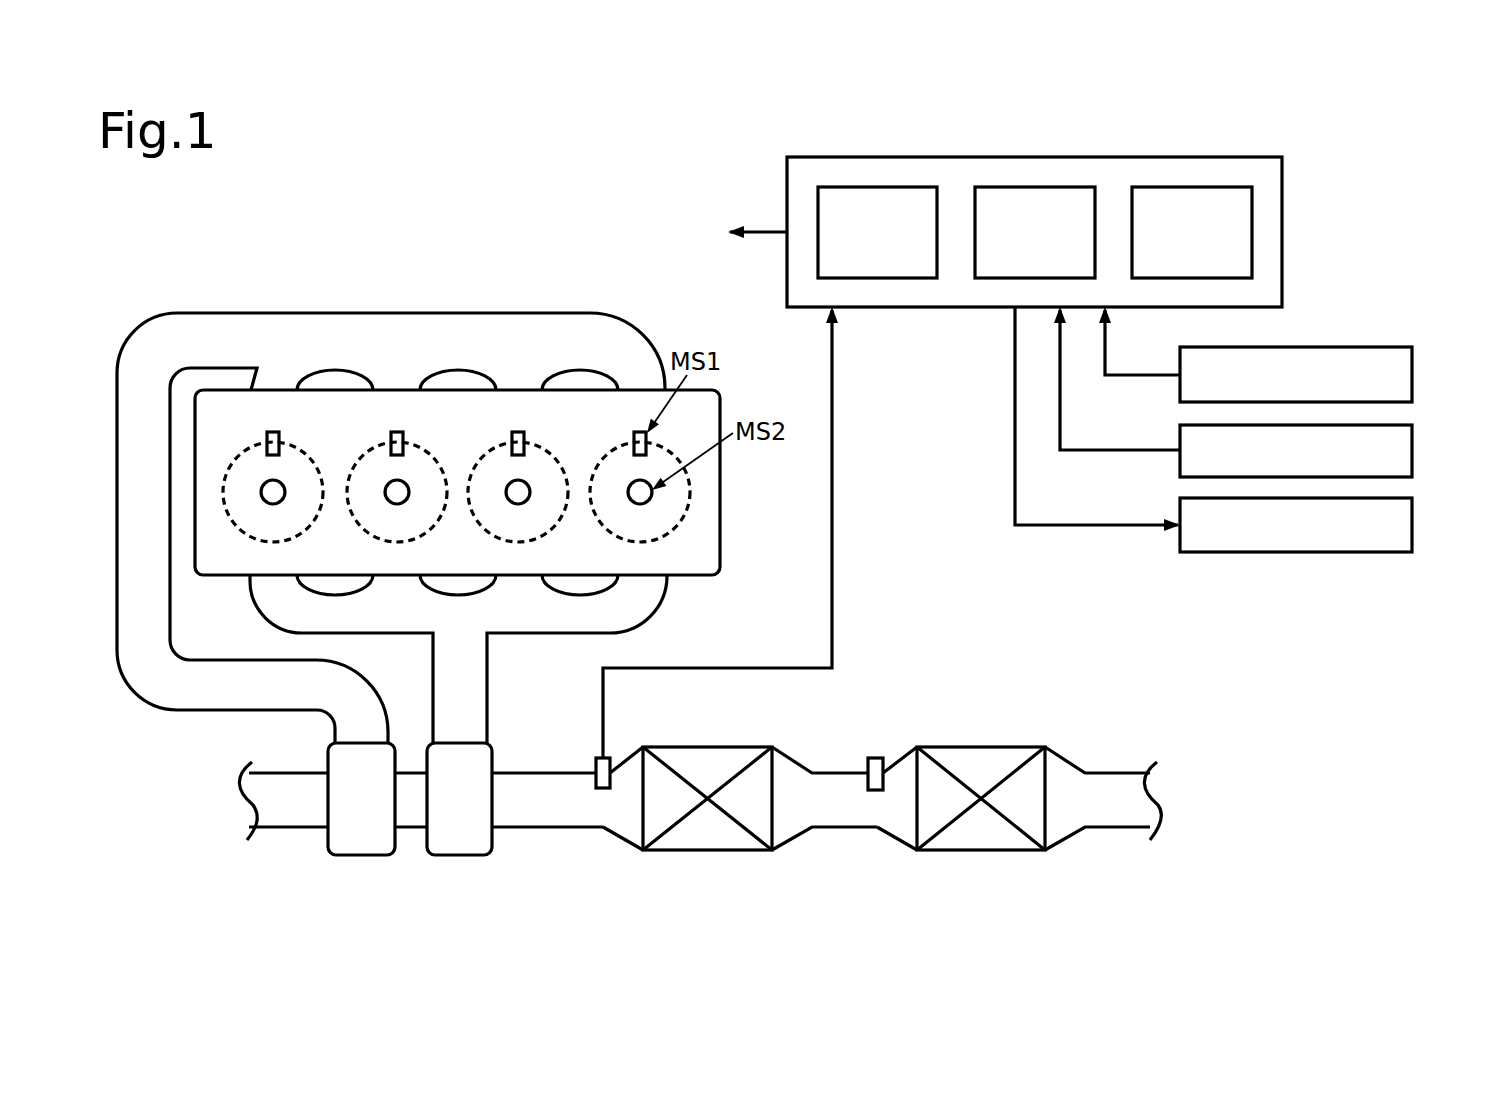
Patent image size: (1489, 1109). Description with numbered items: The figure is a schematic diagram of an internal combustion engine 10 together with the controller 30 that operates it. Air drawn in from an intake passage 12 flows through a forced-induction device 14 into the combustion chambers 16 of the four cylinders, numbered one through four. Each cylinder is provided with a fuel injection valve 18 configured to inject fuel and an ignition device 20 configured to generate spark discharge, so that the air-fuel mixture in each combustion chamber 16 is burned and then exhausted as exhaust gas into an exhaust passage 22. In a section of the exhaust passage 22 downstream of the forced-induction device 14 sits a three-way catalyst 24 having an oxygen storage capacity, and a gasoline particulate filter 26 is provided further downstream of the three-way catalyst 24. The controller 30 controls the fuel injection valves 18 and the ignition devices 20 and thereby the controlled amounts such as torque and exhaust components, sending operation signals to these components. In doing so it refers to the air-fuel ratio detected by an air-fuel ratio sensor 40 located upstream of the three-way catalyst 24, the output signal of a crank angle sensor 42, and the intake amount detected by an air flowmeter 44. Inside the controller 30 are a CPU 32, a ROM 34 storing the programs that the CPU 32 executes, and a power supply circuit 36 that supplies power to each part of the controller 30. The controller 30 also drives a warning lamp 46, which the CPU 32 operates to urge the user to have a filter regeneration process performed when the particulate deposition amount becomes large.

The internal combustion engine 10 is at (505, 262).
The intake passage 12 is at (276, 816).
The forced-induction device 14 is at (410, 846).
The combustion chamber 16 is at (240, 482).
The fuel injection valve 18 is at (277, 431).
The ignition device 20 is at (284, 495).
The exhaust passage 22 is at (640, 598).
The three-way catalyst 24 is at (701, 838).
The gasoline particulate filter 26 is at (979, 838).
The controller 30 is at (1257, 157).
The CPU 32 is at (878, 187).
The ROM 34 is at (1035, 187).
The power supply circuit 36 is at (1192, 187).
The air-fuel ratio sensor 40 is at (596, 758).
The crank angle sensor 42 is at (1412, 375).
The air flowmeter 44 is at (1412, 450).
The warning lamp 46 is at (1412, 525).